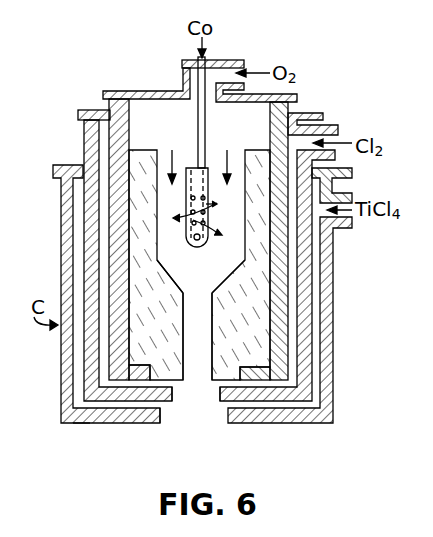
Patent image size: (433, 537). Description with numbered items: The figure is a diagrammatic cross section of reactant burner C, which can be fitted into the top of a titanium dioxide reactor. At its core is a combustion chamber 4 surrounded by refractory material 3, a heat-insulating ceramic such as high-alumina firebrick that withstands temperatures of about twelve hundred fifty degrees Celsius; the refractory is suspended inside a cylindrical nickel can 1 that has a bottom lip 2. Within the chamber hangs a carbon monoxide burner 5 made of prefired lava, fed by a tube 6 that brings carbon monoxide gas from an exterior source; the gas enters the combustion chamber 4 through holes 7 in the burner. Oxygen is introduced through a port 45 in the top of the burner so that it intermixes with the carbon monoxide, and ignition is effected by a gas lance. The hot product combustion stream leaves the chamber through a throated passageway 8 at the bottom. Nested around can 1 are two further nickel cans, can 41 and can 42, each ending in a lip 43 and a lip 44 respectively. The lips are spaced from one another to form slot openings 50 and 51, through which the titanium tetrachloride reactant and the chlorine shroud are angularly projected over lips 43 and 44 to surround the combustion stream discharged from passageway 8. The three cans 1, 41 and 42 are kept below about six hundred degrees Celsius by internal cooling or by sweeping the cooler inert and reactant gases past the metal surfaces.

The can 1 is at (108, 100).
The bottom lip 2 is at (124, 380).
The refractory material 3 is at (141, 153).
The combustion chamber 4 is at (201, 276).
The carbon monoxide burner 5 is at (208, 170).
The tube 6 is at (198, 123).
The holes 7 is at (204, 214).
The throated passageway 8 is at (197, 336).
The can 41 is at (312, 262).
The can 42 is at (334, 335).
The lip 43 is at (174, 396).
The lip 44 is at (80, 423).
The port 45 is at (230, 60).
The slot opening 50 is at (226, 386).
The slot opening 51 is at (155, 406).